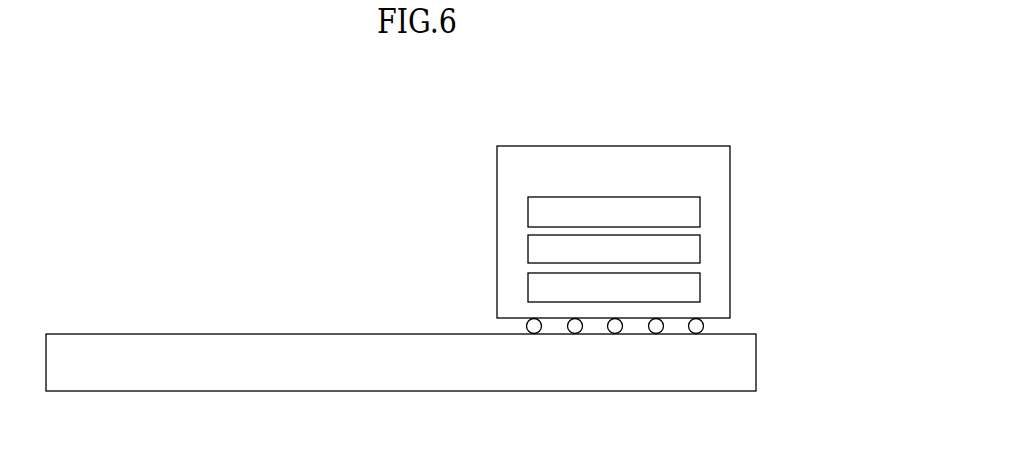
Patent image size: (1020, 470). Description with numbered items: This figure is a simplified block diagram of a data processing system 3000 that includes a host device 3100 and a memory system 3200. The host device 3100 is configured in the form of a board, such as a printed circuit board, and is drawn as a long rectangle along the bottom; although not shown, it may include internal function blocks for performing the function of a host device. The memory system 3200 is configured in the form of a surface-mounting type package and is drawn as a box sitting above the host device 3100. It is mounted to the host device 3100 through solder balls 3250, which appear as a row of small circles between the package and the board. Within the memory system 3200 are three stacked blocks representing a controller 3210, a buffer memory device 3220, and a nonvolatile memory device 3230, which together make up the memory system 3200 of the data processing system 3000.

The data processing system 3000 is at (108, 88).
The host device 3100 is at (401, 362).
The memory system 3200 is at (613, 232).
The controller 3210 is at (614, 212).
The buffer memory device 3220 is at (614, 250).
The nonvolatile memory device 3230 is at (614, 288).
The solder balls 3250 is at (715, 326).